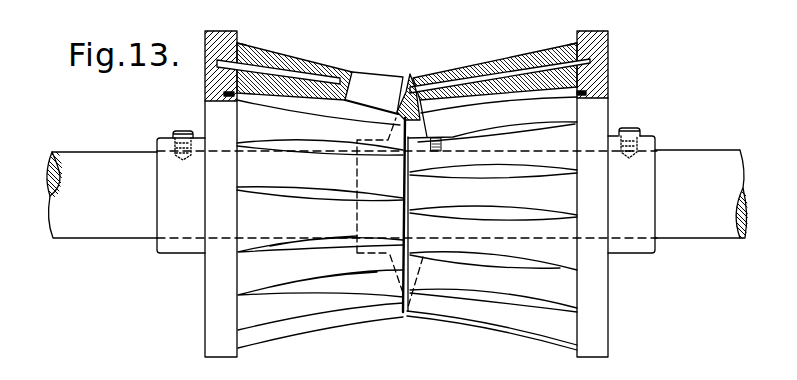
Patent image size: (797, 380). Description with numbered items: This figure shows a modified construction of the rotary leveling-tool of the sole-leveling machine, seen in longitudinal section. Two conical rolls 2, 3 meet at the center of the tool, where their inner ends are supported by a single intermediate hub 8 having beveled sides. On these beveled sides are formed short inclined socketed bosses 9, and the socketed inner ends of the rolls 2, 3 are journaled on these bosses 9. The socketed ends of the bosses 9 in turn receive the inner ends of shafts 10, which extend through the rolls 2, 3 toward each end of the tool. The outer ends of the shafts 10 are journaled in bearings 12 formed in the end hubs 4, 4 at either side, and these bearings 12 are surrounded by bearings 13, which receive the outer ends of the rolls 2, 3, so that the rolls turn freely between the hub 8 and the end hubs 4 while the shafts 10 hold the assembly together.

The roll 2 is at (528, 55).
The roll 3 is at (288, 63).
The end hub 4 is at (214, 51).
The intermediate hub 8 is at (397, 115).
The inclined socketed boss 9 is at (413, 80).
The shaft 10 is at (318, 78).
The bearing 12 is at (210, 75).
The bearing 13 is at (215, 54).